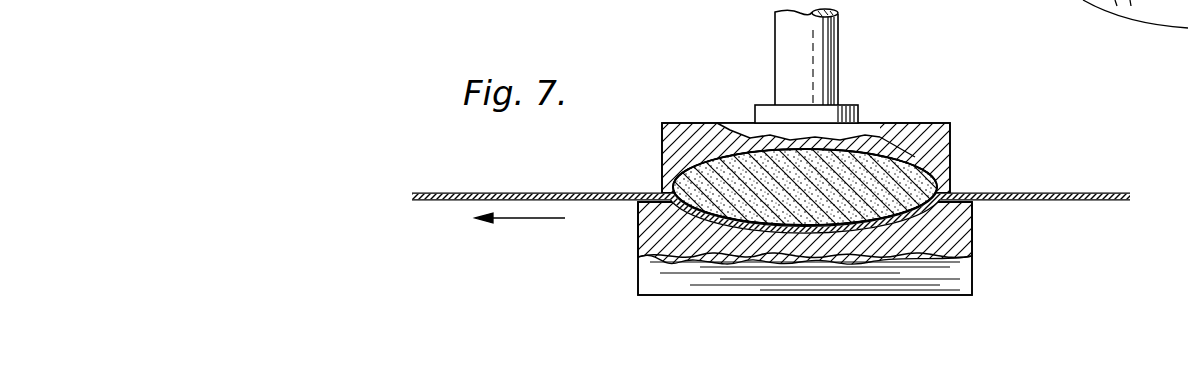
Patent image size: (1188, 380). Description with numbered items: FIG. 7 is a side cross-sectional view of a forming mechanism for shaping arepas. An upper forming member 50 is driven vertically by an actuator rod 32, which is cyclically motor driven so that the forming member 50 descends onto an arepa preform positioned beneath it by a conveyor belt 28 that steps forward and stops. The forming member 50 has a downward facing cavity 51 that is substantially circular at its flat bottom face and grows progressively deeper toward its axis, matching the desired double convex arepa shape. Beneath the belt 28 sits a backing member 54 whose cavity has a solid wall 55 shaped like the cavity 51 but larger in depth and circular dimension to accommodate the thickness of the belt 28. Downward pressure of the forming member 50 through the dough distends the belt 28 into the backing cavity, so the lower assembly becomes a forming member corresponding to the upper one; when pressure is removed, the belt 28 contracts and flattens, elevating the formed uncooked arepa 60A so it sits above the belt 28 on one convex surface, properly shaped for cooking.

The conveyor belt 28 is at (1093, 193).
The actuator rod 32 is at (838, 44).
The upper forming member 50 is at (913, 132).
The cavity 51 is at (917, 155).
The backing member 54 is at (973, 277).
The solid wall 55 is at (850, 228).
The formed uncooked arepa 60A is at (700, 165).